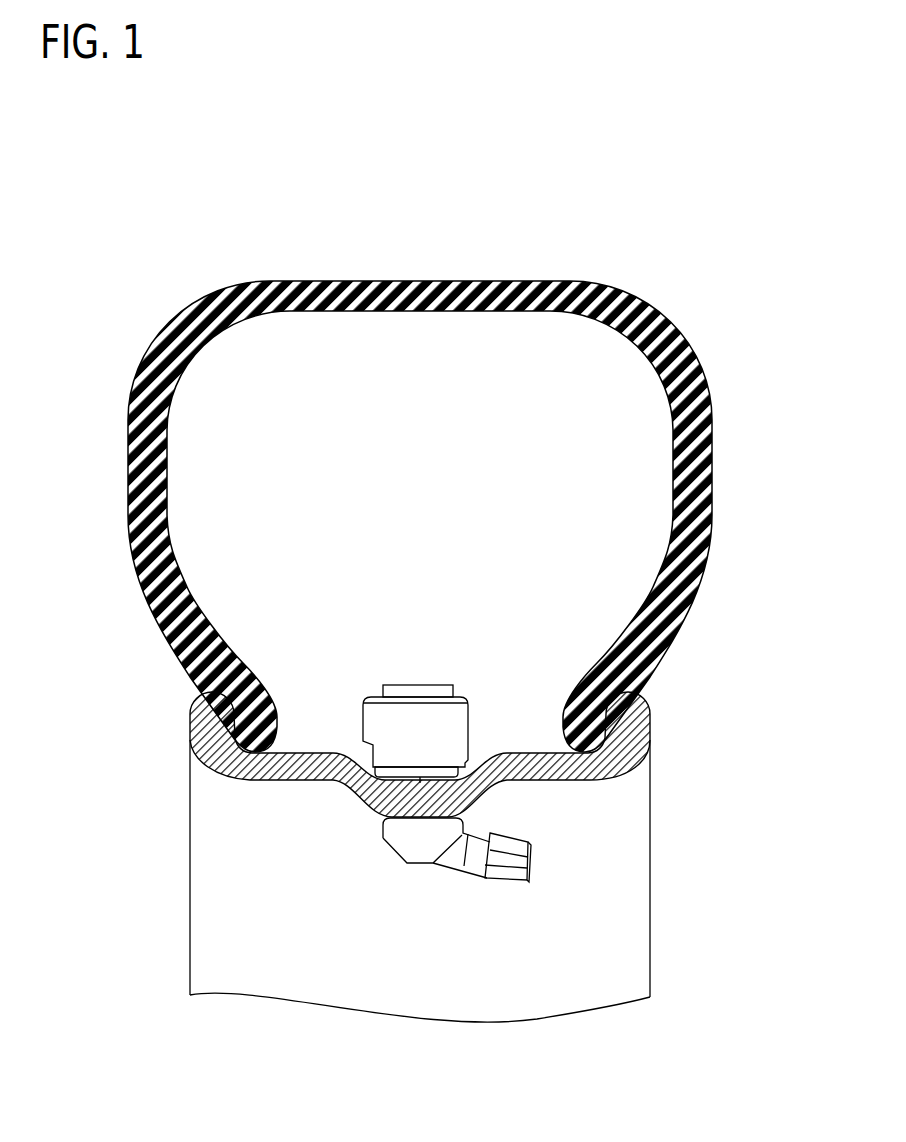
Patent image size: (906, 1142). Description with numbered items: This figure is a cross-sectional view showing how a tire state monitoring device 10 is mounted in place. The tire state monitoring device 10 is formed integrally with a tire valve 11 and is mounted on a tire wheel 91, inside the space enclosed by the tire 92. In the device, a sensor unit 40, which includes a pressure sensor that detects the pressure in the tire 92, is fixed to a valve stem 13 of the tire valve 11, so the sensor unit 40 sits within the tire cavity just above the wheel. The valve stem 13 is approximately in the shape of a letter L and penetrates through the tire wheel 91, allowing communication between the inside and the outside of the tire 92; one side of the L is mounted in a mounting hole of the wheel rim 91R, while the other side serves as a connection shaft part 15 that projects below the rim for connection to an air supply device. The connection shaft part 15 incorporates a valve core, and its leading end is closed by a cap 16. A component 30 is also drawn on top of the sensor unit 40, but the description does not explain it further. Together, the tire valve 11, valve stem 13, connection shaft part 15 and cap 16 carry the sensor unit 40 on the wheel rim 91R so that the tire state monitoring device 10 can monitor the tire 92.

The tire state monitoring device 10 is at (406, 782).
The tire valve 11 is at (406, 893).
The valve stem 13 is at (417, 848).
The connection shaft part 15 is at (477, 858).
The cap 16 is at (510, 872).
The cover 30 is at (397, 690).
The sensor unit 40 is at (377, 722).
The tire wheel 91 is at (464, 857).
The wheel rim 91R is at (535, 767).
The tire 92 is at (693, 468).